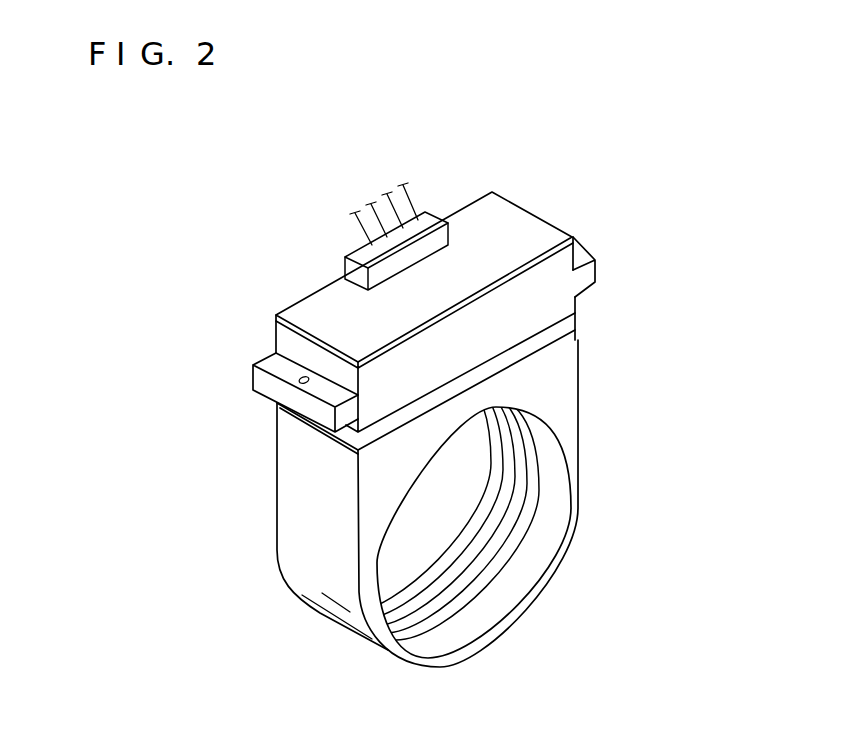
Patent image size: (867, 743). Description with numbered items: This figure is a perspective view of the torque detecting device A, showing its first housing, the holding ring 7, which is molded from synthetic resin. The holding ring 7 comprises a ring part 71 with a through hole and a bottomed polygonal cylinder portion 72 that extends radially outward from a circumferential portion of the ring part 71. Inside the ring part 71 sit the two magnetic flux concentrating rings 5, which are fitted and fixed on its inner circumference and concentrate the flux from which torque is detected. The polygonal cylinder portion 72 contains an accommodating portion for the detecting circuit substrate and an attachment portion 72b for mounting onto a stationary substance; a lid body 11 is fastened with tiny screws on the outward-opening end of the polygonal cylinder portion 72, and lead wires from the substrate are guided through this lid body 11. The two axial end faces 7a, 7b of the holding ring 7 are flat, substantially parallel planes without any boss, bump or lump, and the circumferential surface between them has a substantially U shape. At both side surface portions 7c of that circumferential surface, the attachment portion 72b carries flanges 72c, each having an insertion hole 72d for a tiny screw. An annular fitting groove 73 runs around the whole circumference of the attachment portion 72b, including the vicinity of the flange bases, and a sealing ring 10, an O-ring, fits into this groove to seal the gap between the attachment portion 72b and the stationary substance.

The torque detecting device A is at (467, 186).
The lid body 11 is at (510, 208).
The polygonal cylinder portion 72 is at (273, 333).
The attachment portion 72b is at (560, 301).
The flanges 72c is at (272, 368).
The insertion holes 72d is at (298, 381).
The annular fitting groove 73 is at (517, 350).
The sealing ring 10 is at (573, 339).
The holding ring 7 is at (264, 549).
The end face 7a is at (277, 452).
The end face 7b is at (577, 440).
The side surface portions 7c is at (292, 500).
The ring part 71 is at (388, 652).
The magnetic flux concentrating rings 5 is at (480, 532).